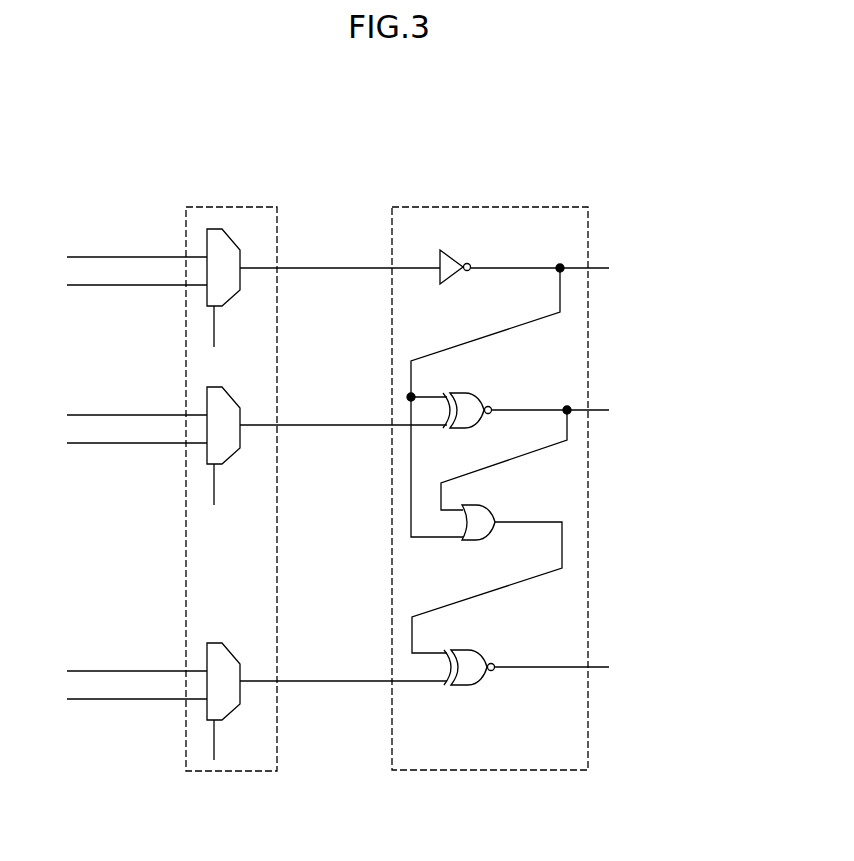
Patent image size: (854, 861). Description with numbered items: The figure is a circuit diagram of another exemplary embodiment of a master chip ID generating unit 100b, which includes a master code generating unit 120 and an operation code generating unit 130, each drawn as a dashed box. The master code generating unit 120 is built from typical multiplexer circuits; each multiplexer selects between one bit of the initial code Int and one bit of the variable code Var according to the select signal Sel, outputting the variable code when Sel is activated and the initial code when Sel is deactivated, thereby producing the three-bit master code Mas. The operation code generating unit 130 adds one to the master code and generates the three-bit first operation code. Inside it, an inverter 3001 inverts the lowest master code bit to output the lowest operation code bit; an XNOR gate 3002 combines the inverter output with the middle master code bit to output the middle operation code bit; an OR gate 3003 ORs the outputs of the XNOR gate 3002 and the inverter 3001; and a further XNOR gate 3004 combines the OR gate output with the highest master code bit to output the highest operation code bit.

The master chip ID generating unit 100b is at (152, 108).
The master code generating unit 120 is at (230, 207).
The operation code generating unit 130 is at (519, 207).
The inverter 3001 is at (452, 259).
The XNOR gate 3002 is at (471, 393).
The OR gate 3003 is at (484, 505).
The XNOR gate 3004 is at (474, 650).